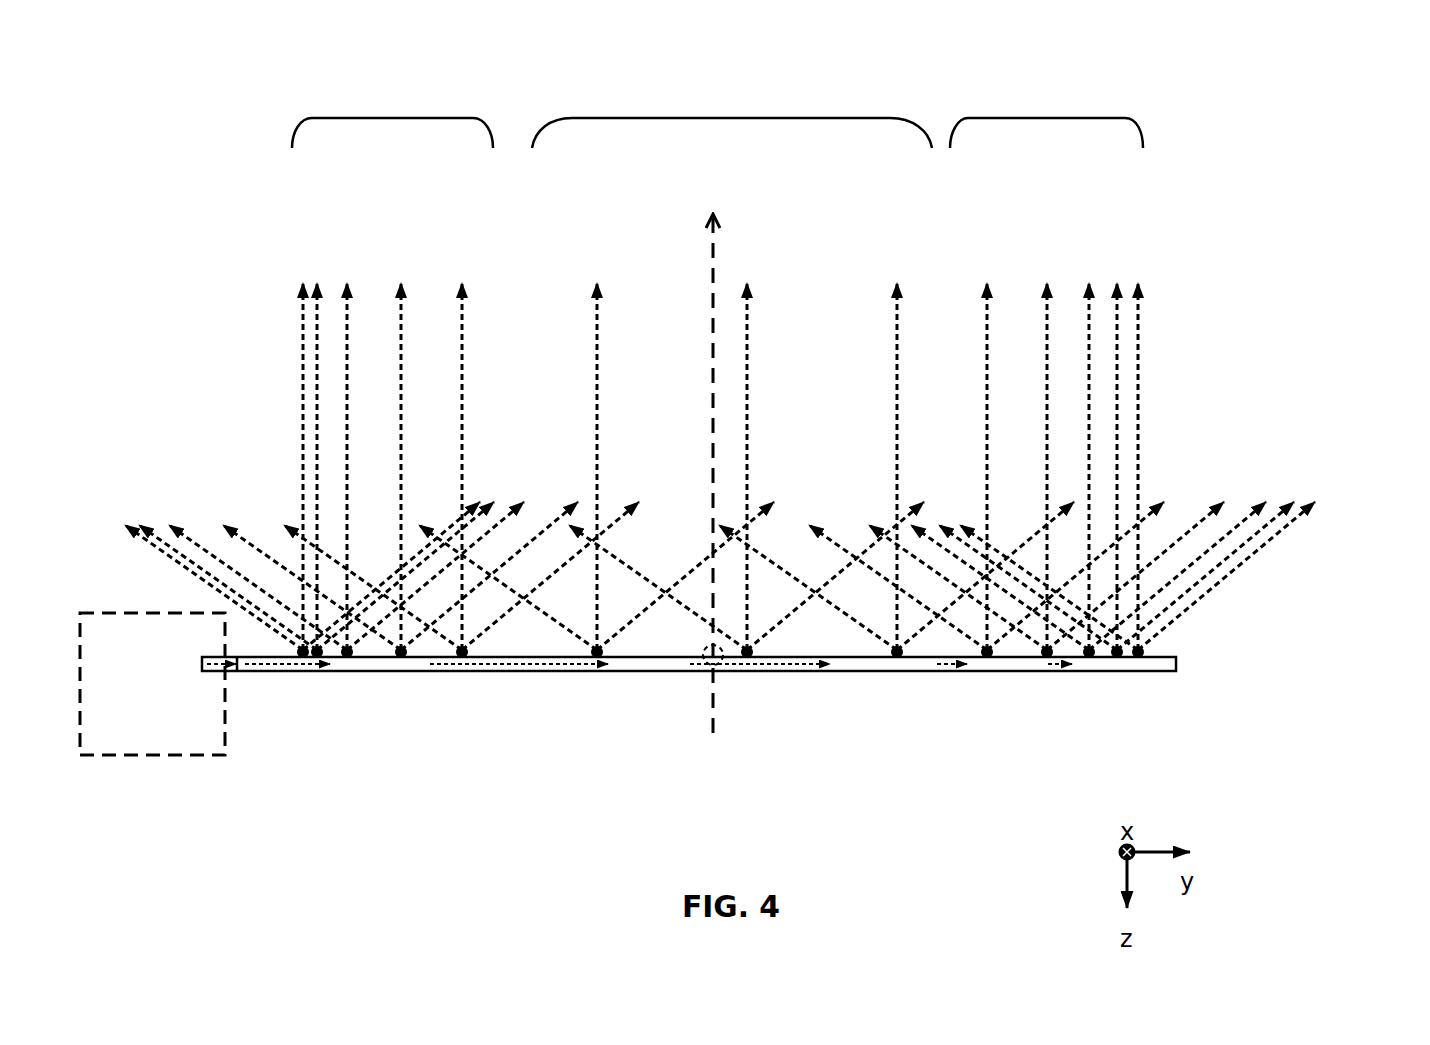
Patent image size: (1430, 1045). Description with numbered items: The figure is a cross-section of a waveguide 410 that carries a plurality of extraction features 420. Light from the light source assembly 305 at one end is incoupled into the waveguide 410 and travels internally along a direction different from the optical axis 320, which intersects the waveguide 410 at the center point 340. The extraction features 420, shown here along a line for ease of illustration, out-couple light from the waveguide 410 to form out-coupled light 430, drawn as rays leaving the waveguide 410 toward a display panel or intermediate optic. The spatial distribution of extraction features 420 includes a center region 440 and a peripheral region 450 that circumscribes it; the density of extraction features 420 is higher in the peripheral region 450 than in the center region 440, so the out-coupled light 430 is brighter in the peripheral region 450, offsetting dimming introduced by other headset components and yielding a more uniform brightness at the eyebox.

The light source assembly 305 is at (152, 684).
The optical axis 320 is at (714, 438).
The center point 340 is at (706, 642).
The waveguide 410 is at (1181, 662).
The extraction features 420 is at (303, 657).
The out-coupled light 430 is at (1202, 212).
The center region 440 is at (732, 118).
The peripheral region 450 is at (1047, 88).